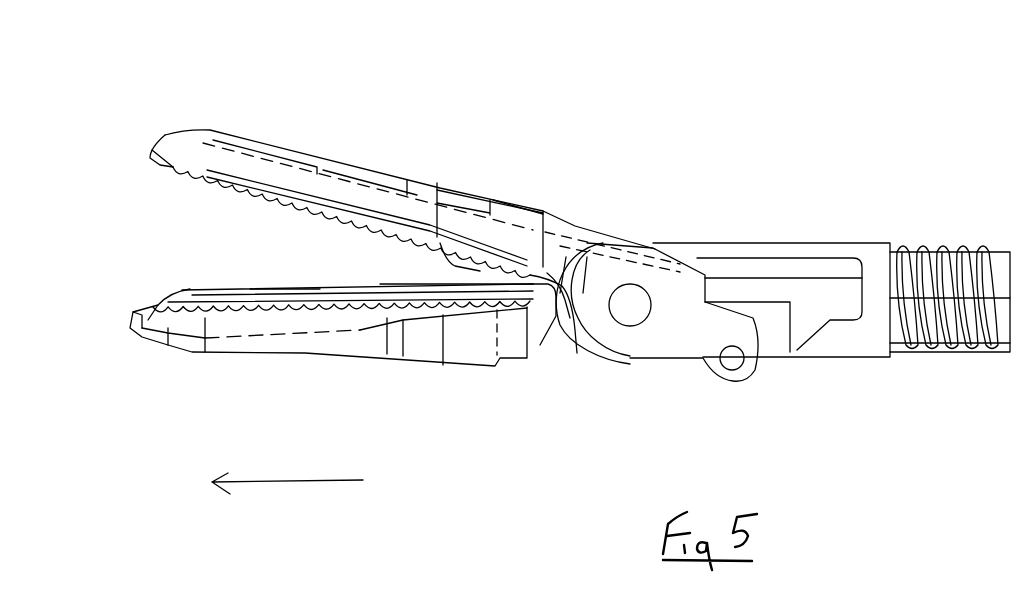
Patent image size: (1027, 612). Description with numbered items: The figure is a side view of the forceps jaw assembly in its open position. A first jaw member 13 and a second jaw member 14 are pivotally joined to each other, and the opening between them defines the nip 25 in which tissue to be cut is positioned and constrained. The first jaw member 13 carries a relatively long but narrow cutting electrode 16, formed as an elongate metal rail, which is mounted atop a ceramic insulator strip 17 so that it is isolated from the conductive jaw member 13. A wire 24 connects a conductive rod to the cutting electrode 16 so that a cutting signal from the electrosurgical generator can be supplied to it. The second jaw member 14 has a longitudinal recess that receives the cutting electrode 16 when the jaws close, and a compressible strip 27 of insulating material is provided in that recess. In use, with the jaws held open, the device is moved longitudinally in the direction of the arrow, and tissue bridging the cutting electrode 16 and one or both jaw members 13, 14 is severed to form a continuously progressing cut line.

The first jaw member 13 is at (243, 355).
The second jaw member 14 is at (303, 157).
The cutting electrode 16 is at (277, 283).
The ceramic insulator strip 17 is at (383, 297).
The wire 24 is at (548, 356).
The nip 25 is at (443, 233).
The compressible strip 27 is at (190, 125).